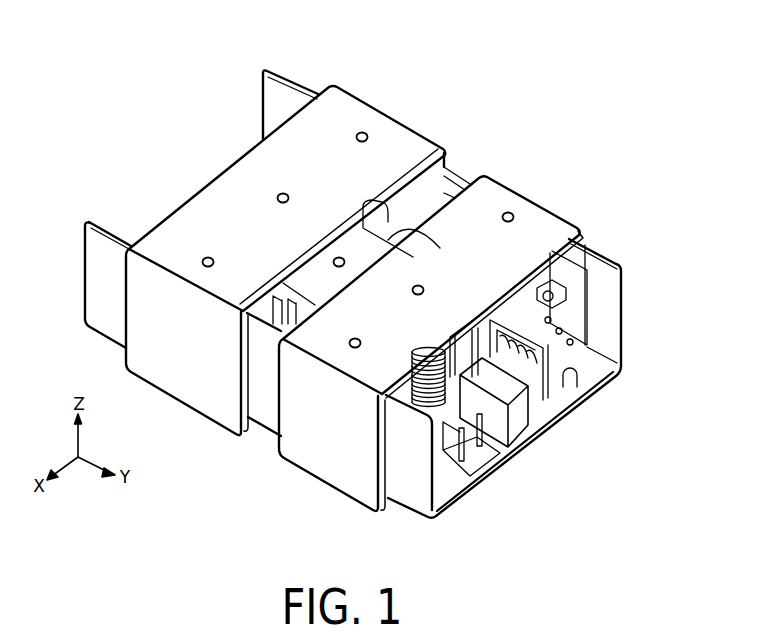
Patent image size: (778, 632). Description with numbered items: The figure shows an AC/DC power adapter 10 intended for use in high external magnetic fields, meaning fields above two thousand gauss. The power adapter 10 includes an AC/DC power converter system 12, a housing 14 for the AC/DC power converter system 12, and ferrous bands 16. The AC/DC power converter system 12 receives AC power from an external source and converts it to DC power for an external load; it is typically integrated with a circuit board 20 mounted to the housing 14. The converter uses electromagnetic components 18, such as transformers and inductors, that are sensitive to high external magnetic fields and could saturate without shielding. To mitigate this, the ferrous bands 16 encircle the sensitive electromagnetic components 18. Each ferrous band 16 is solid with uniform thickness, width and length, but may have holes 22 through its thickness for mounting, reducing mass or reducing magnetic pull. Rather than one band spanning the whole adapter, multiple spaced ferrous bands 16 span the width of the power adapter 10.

The AC/DC power adapter 10 is at (604, 96).
The AC/DC power converter system 12 is at (586, 433).
The housing 14 is at (268, 70).
The ferrous bands 16 is at (235, 182).
The electromagnetic components 18 is at (277, 311).
The circuit board 20 is at (593, 367).
The holes 22 is at (284, 193).